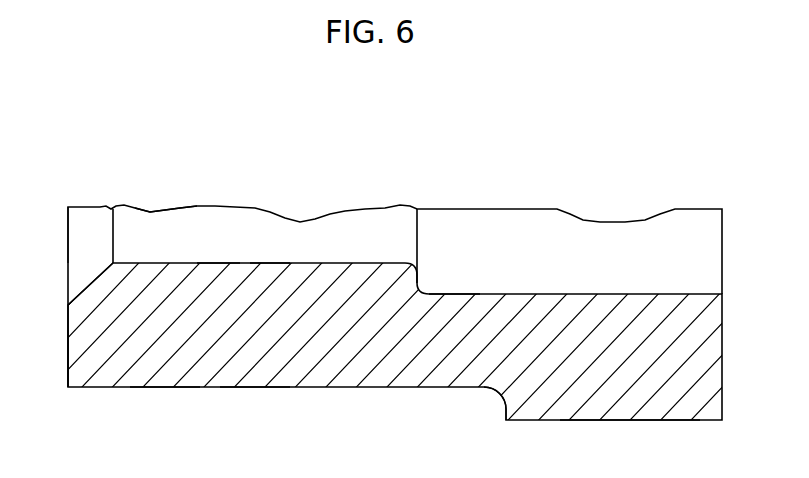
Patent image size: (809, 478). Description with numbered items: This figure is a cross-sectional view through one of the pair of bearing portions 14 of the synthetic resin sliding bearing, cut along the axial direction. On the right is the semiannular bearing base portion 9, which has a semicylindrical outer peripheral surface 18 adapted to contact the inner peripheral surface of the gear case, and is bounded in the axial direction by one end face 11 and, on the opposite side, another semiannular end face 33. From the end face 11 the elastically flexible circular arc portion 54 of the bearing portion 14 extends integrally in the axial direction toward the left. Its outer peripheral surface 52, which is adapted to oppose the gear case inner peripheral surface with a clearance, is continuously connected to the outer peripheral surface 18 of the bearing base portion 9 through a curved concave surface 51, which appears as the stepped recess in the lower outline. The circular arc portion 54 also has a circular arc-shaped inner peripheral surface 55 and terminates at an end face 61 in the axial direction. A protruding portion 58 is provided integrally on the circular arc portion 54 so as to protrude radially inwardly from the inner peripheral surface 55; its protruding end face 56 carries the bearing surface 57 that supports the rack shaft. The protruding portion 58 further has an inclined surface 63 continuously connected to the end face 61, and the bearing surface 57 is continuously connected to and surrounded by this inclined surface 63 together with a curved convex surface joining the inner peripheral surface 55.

The bearing base portion 9 is at (623, 350).
The end face 11 is at (503, 408).
The bearing portions 14 is at (166, 387).
The outer peripheral surface 18 is at (622, 421).
The end face 33 is at (722, 243).
The curved concave surface 51 is at (482, 388).
The outer peripheral surface 52 is at (255, 388).
The circular arc portion 54 is at (128, 345).
The inner peripheral surface 55 is at (455, 293).
The protruding end face 56 is at (218, 262).
The bearing surface 57 is at (163, 225).
The protruding portion 58 is at (268, 272).
The end face 61 is at (68, 370).
The inclined surface 63 is at (78, 236).